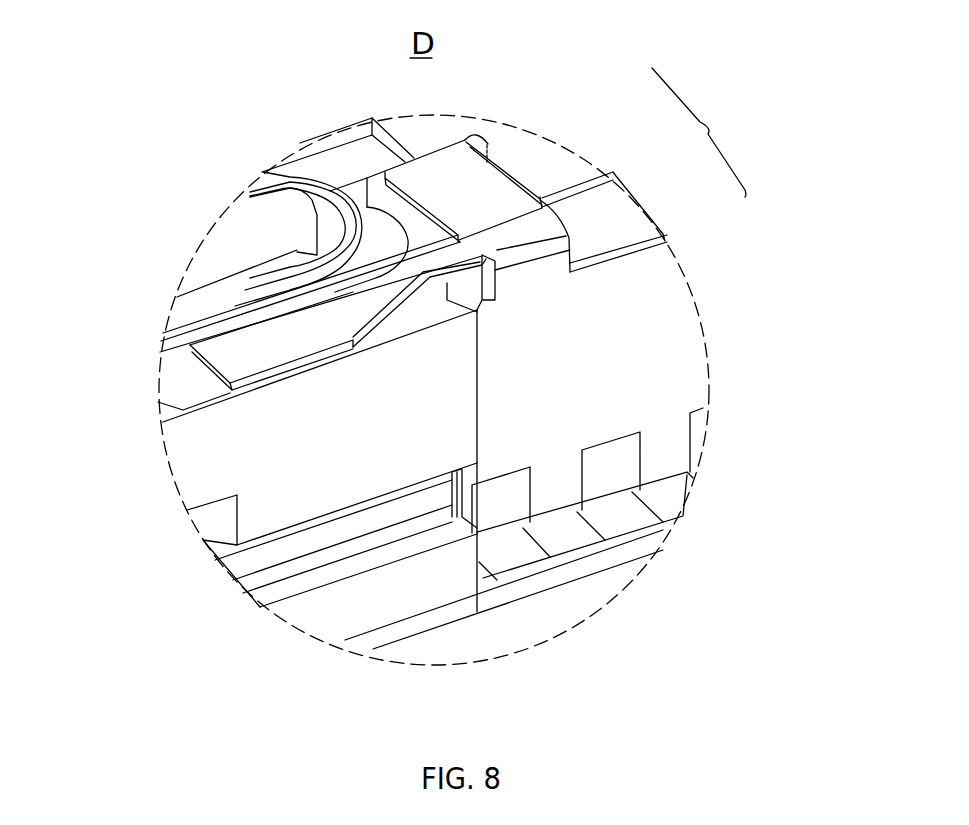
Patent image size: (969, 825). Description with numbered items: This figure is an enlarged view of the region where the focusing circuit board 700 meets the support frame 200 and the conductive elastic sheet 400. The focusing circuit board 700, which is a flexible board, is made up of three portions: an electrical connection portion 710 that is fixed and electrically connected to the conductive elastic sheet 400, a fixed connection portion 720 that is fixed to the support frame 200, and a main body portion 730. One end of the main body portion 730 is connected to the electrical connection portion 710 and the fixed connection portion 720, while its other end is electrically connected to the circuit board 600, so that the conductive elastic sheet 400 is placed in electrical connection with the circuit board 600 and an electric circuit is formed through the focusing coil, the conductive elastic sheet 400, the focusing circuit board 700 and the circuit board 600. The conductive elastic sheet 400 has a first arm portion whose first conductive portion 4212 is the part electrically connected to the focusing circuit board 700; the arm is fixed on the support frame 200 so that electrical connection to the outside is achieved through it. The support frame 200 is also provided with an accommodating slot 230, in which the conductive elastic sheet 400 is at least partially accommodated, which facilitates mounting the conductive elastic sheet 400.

The support frame 200 is at (190, 478).
The accommodating slot 230 is at (268, 278).
The conductive elastic sheet 400 is at (323, 200).
The first conductive portion 4212 is at (172, 373).
The circuit board 600 is at (563, 538).
The focusing circuit board 700 is at (714, 132).
The electrical connection portion 710 is at (337, 327).
The fixed connection portion 720 is at (460, 183).
The main body portion 730 is at (562, 352).